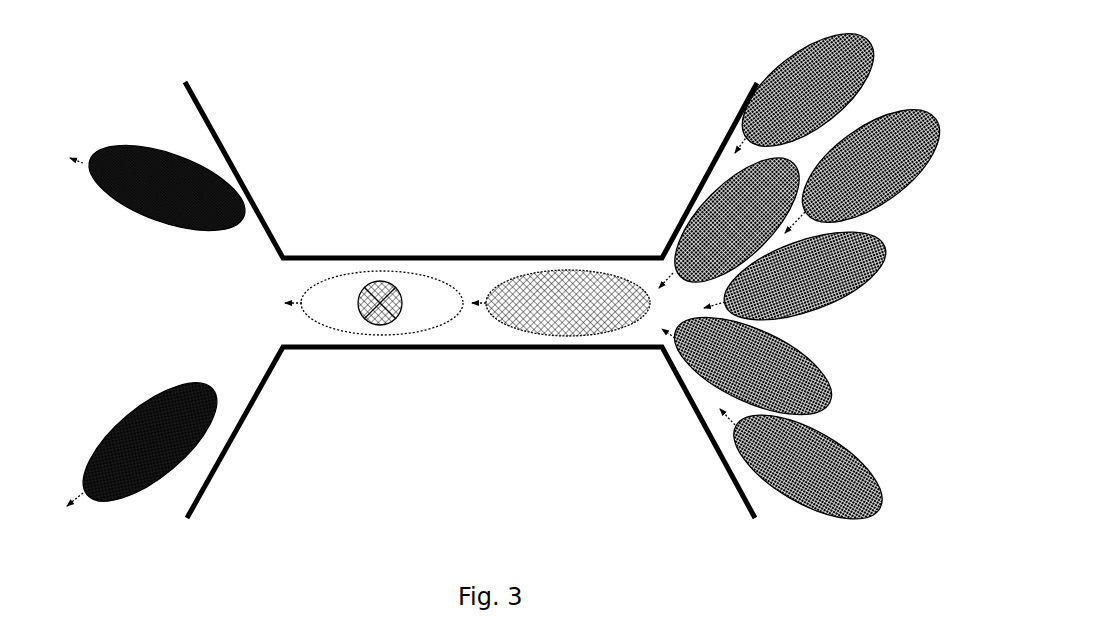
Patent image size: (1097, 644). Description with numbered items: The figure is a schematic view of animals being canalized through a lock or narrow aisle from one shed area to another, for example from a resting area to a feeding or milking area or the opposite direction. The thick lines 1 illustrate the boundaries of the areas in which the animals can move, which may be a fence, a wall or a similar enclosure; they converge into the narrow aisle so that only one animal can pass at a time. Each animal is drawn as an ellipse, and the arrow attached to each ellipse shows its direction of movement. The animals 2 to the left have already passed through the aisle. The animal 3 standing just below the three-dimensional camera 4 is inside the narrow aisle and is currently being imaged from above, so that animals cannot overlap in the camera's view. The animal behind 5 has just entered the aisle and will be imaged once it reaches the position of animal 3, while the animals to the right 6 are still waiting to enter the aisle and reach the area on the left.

The thick lines 1 is at (200, 105).
The animals to the left 2 is at (195, 197).
The animal within the narrow aisle 3 is at (345, 292).
The 3D camera 4 is at (385, 282).
The animal behind 5 is at (550, 292).
The animals to the right 6 is at (693, 198).